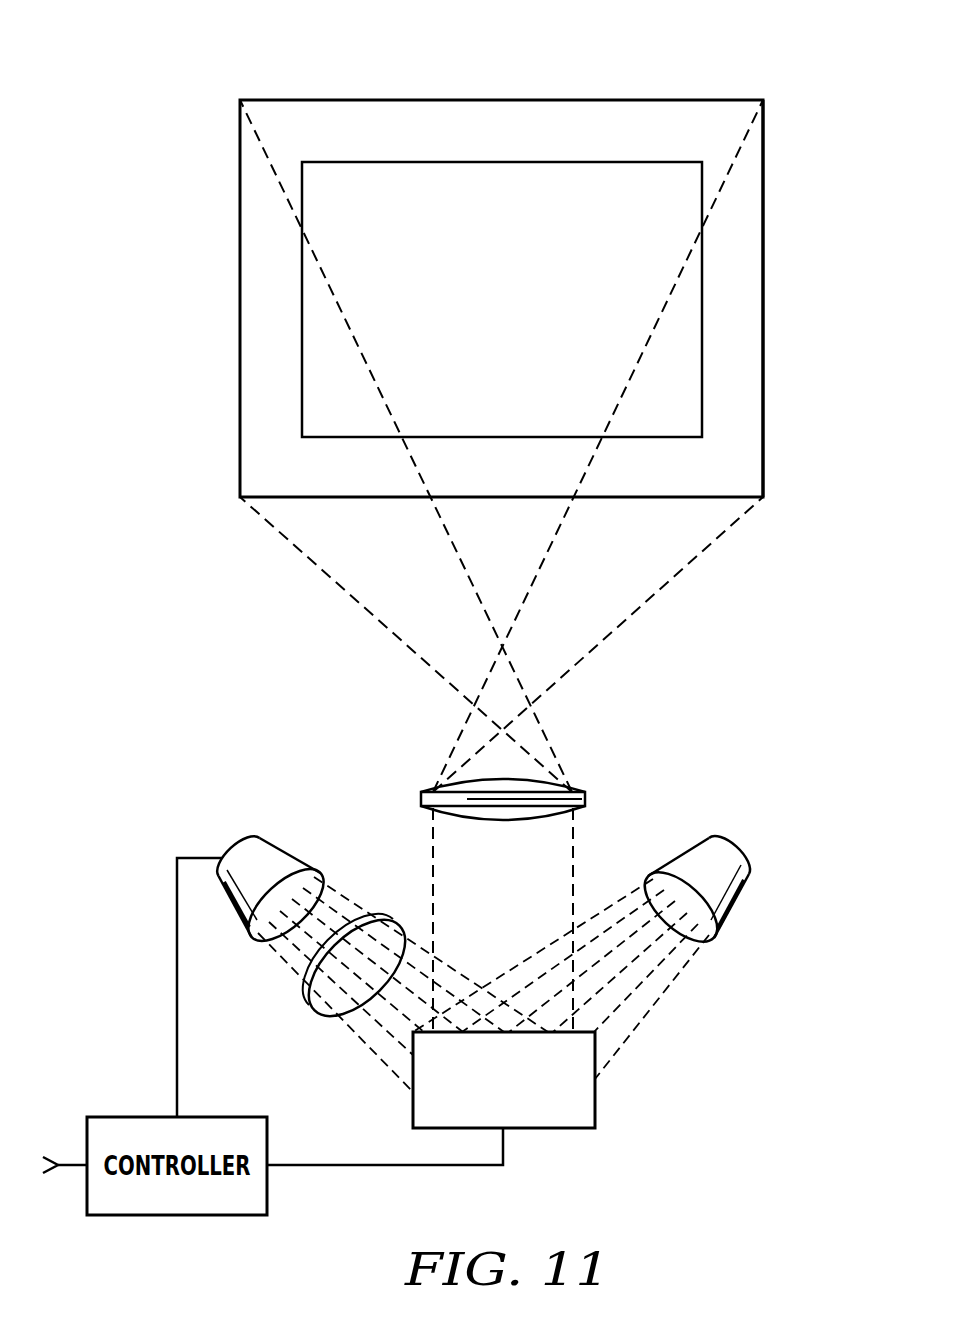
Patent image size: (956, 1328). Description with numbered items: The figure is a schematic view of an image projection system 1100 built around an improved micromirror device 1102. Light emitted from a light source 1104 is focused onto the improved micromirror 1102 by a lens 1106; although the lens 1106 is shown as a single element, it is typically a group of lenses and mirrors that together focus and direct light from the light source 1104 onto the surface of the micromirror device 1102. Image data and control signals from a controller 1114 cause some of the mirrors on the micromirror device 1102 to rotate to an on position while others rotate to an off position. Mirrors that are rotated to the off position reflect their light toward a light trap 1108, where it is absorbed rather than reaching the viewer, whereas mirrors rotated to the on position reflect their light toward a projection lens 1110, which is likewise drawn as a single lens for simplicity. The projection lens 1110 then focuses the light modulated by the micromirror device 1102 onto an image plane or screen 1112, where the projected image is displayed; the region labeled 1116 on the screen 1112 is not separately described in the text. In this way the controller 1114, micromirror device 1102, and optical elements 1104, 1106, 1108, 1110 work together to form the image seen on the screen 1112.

The image projection system 1100 is at (406, 70).
The micromirror device 1102 is at (540, 1093).
The light source 1104 is at (276, 862).
The lens 1106 is at (310, 1010).
The light trap 1108 is at (728, 855).
The projection lens 1110 is at (585, 799).
The screen 1112 is at (240, 289).
The controller 1114 is at (745, 365).
The display image area 1116 is at (602, 184).